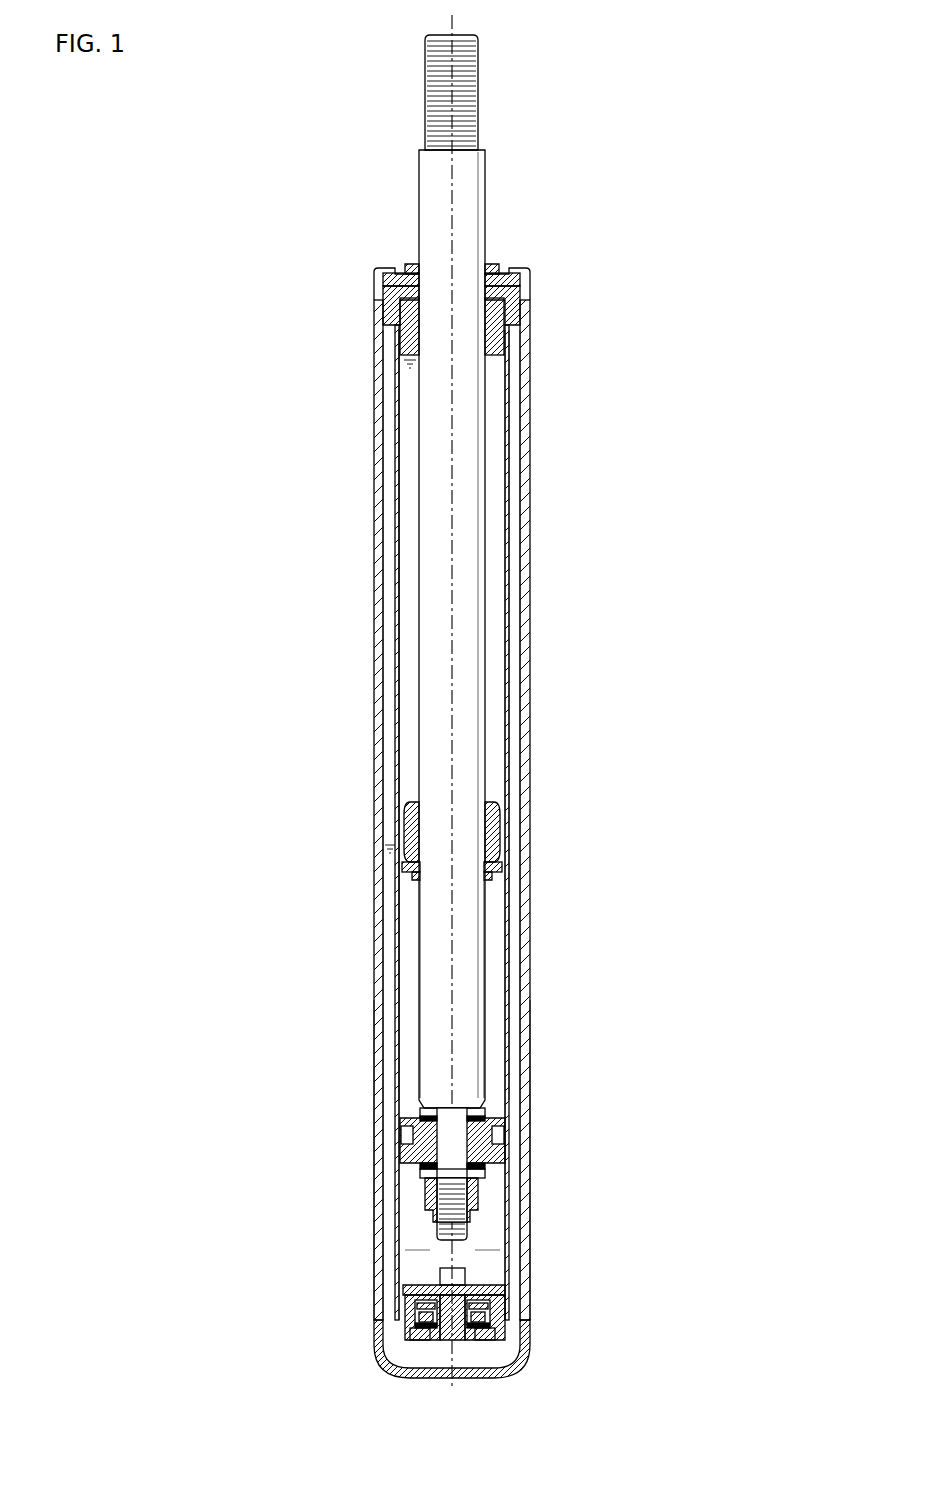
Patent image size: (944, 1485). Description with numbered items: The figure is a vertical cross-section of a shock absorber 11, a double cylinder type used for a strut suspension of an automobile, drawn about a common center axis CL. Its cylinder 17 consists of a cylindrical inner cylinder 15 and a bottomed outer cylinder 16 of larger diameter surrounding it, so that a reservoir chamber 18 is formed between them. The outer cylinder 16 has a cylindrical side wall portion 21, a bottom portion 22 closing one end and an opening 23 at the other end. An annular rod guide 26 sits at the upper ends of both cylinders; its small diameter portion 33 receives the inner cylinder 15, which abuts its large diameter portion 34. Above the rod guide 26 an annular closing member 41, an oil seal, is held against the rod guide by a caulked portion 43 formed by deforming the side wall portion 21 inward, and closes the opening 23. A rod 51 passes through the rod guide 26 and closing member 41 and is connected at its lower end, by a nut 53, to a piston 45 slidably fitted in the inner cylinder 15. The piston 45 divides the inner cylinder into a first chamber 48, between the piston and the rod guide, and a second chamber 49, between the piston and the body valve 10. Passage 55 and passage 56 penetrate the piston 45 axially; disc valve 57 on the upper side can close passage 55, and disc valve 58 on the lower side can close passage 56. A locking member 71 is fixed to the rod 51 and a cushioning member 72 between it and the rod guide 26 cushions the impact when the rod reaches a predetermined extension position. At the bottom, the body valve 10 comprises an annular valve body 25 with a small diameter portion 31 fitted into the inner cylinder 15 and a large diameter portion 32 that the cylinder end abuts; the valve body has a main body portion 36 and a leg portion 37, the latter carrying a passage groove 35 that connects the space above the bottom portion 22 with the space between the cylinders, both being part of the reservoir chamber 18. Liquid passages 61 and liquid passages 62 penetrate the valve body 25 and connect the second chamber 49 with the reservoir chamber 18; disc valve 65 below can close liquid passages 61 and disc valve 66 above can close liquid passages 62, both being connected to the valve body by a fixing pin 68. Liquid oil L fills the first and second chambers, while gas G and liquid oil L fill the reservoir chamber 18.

The shock absorber 11 is at (584, 93).
The rod 51 is at (490, 199).
The closing member 41 is at (414, 264).
The caulked portion 43 is at (393, 268).
The opening 23 is at (495, 265).
The large diameter portion 34 is at (388, 290).
The rod guide 26 is at (508, 305).
The small diameter portion 33 is at (380, 340).
The gas G is at (512, 470).
The liquid oil L is at (410, 576).
The outer cylinder 16 is at (530, 645).
The cylinder 17 is at (535, 698).
The inner cylinder 15 is at (506, 745).
The side wall portion 21 is at (522, 780).
The reservoir chamber 18 is at (513, 810).
The cushioning member 72 is at (410, 818).
The locking member 71 is at (410, 878).
The first chamber 48 is at (500, 960).
The center axis CL is at (440, 970).
The disc valve 57 is at (490, 1115).
The piston 45 is at (508, 1140).
The passage 56 is at (405, 1130).
The passage 55 is at (485, 1140).
The nut 53 is at (478, 1197).
The disc valve 58 is at (415, 1165).
The second chamber 49 is at (490, 1242).
The fixing pin 68 is at (452, 1270).
The body valve 10 is at (488, 1276).
The small diameter portion 31 is at (420, 1310).
The disc valve 66 is at (495, 1283).
The main body portion 36 is at (405, 1305).
The liquid passages 61 is at (430, 1312).
The valve body 25 is at (510, 1305).
The large diameter portion 32 is at (400, 1323).
The leg portion 37 is at (505, 1318).
The liquid passages 62 is at (490, 1330).
The disc valve 65 is at (420, 1330).
The passage groove 35 is at (440, 1340).
The bottom portion 22 is at (500, 1362).